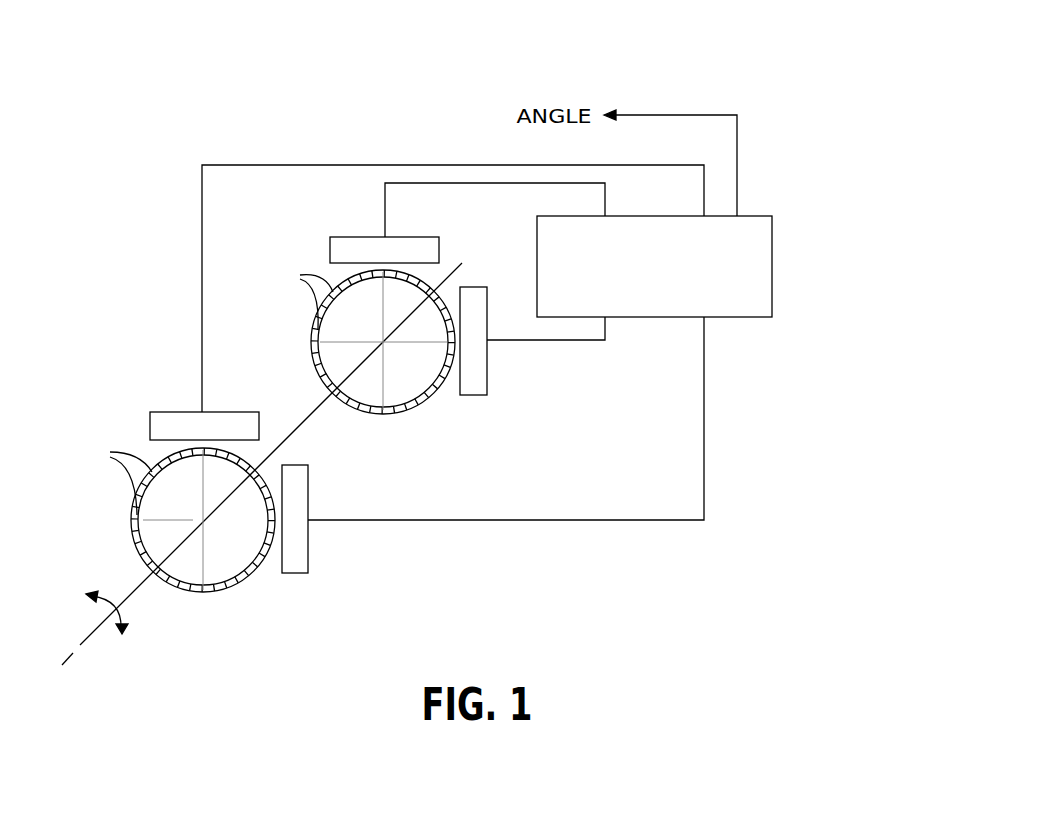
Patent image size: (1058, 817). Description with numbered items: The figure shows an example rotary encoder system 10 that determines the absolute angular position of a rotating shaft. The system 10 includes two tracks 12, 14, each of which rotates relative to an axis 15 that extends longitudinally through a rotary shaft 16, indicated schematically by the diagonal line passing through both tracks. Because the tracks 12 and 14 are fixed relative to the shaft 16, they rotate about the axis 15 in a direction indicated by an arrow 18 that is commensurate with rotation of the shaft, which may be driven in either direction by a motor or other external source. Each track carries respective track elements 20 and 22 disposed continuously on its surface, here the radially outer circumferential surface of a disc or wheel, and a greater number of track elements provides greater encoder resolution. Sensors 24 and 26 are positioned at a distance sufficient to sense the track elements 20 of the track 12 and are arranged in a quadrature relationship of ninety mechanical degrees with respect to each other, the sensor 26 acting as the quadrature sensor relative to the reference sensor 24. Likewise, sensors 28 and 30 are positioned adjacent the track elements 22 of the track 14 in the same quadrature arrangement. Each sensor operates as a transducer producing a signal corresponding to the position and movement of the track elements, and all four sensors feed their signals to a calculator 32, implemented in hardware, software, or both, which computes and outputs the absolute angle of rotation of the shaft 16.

The rotary encoder system 10 is at (701, 67).
The track 12 is at (215, 596).
The track 14 is at (403, 414).
The axis 15 is at (66, 659).
The rotary shaft 16 is at (452, 262).
The arrow 18 is at (122, 612).
The track elements 20 is at (116, 478).
The track elements 22 is at (303, 296).
The sensor 24 is at (300, 575).
The sensor 26 is at (165, 412).
The sensor 28 is at (481, 397).
The sensor 30 is at (357, 237).
The calculator 32 is at (750, 216).